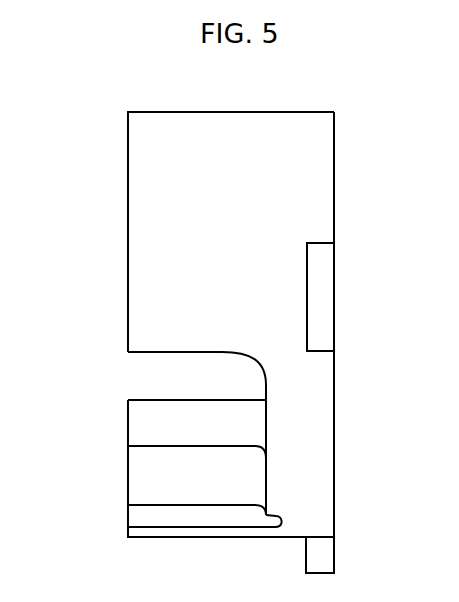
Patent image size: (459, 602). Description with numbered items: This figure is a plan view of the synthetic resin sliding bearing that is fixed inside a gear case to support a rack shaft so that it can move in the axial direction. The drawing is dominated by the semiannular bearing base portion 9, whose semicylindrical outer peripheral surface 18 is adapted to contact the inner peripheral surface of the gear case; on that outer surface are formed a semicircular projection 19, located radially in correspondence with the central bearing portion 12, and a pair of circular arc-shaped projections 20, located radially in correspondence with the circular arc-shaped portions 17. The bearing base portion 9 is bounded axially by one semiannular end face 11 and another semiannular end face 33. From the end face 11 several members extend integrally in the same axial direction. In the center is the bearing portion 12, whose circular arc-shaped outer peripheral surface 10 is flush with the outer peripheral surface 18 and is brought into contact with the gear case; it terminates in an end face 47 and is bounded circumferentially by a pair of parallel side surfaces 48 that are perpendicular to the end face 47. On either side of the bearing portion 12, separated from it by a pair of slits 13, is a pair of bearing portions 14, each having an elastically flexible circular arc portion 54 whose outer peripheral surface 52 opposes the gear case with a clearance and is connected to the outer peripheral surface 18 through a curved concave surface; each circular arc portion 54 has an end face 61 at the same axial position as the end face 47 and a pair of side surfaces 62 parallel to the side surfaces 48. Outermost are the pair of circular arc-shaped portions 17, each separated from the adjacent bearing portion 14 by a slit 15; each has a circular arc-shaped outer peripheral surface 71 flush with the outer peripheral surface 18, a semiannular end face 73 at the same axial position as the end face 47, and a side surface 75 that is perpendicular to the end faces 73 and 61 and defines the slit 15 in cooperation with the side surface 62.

The circular arc-shaped outer peripheral surface 71 is at (152, 128).
The semiannular end face 73 is at (128, 159).
The circular arc-shaped portion 17 is at (126, 192).
The semicylindrical outer peripheral surface 18 is at (320, 152).
The semiannular end face 33 is at (335, 190).
The circular arc-shaped projection 20 is at (316, 297).
The bearing base portion 9 is at (312, 402).
The semicircular projection 19 is at (320, 551).
The side surface 75 is at (170, 352).
The slit 15 is at (162, 375).
The semiannular end face 11 is at (266, 474).
The side surface 62 is at (158, 424).
The end face 61 is at (128, 434).
The elastically flexible circular arc portion 54 is at (147, 460).
The bearing portion 14 is at (127, 482).
The outer peripheral surface 52 is at (147, 495).
The slit 13 is at (138, 516).
The side surface 48 is at (240, 516).
The end face 47 is at (126, 534).
The bearing portion 12 is at (162, 540).
The circular arc-shaped outer peripheral surface 10 is at (206, 538).